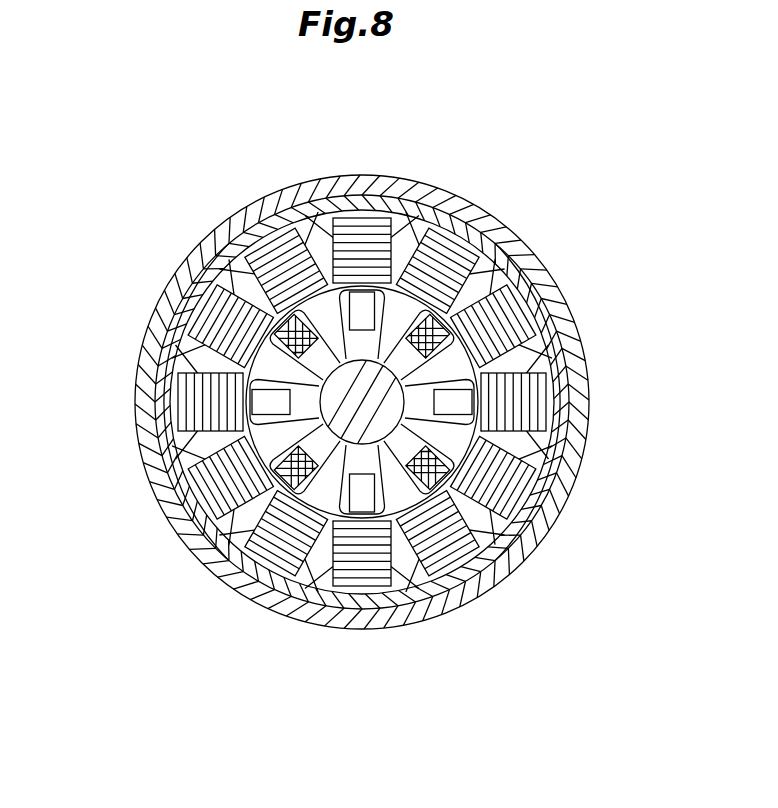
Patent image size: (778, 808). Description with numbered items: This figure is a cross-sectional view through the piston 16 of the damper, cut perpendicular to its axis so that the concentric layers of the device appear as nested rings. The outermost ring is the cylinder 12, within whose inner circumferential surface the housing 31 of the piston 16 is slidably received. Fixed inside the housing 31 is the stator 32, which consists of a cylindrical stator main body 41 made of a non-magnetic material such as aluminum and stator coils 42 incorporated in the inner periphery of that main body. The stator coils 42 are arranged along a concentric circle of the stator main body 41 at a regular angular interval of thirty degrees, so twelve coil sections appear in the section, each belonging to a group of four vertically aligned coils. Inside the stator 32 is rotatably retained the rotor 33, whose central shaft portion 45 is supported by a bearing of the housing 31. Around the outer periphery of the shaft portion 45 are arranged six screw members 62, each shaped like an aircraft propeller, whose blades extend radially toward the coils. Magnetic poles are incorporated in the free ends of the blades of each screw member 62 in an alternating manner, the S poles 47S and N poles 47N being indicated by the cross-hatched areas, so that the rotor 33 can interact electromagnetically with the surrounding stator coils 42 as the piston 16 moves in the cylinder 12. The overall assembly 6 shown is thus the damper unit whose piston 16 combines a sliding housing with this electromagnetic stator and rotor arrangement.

The motor 6 is at (145, 183).
The cylinder 12 is at (512, 566).
The piston 16 is at (505, 230).
The housing 31 is at (542, 302).
The stator 32 is at (230, 560).
The rotor 33 is at (255, 437).
The stator main body 41 is at (432, 585).
The stator coils 42 is at (372, 588).
The shaft portion 45 is at (328, 392).
The N pole 47N is at (278, 467).
The S pole 47S is at (350, 492).
The screw member 62 is at (558, 340).